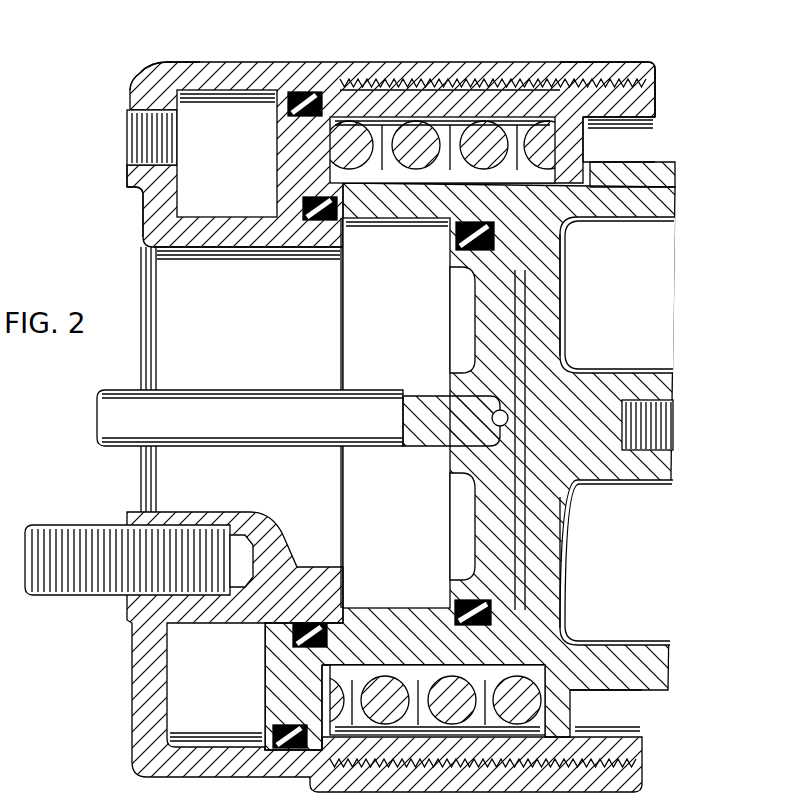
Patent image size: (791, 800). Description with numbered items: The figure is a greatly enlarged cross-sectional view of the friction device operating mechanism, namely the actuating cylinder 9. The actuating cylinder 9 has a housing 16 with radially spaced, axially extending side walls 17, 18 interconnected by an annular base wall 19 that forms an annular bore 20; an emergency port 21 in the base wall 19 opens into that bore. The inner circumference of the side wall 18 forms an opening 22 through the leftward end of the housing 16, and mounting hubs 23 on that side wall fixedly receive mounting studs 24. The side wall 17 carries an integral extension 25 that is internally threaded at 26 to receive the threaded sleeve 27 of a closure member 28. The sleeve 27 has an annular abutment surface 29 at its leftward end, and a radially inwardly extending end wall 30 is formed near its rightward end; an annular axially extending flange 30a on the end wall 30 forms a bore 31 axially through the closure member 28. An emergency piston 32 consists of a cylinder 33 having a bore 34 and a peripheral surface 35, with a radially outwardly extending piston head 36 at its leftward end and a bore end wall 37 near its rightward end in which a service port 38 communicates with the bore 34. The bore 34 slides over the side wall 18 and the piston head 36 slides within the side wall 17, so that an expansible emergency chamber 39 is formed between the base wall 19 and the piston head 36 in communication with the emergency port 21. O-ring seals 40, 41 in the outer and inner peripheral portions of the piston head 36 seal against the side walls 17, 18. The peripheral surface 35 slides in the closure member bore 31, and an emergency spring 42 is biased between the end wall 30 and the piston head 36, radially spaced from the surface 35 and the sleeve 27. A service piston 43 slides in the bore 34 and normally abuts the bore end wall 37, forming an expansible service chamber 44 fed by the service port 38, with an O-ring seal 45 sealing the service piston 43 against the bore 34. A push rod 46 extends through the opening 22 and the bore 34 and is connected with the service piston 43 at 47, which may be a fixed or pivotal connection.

The actuating cylinder 9 is at (130, 60).
The housing 16 is at (180, 62).
The side wall 17 is at (247, 76).
The side wall 18 is at (240, 252).
The base wall 19 is at (150, 208).
The annular bore 20 is at (205, 218).
The emergency port 21 is at (138, 159).
The opening 22 is at (176, 258).
The mounting hubs 23 is at (205, 512).
The mounting studs 24 is at (56, 527).
The integral extension 25 is at (582, 64).
The internal threads 26 is at (416, 82).
The threaded sleeve 27 is at (475, 92).
The closure member 28 is at (652, 102).
The annular abutment surface 29 is at (326, 100).
The end wall 30 is at (578, 141).
The annular axially extending flange 30a is at (670, 173).
The bore 31 is at (673, 201).
The emergency piston 32 is at (662, 268).
The cylinder 33 is at (449, 649).
The cylinder bore 34 is at (371, 623).
The peripheral surface 35 is at (508, 663).
The piston head 36 is at (292, 672).
The bore end wall 37 is at (553, 290).
The service port 38 is at (673, 447).
The emergency chamber 39 is at (234, 156).
The O-ring seal 40 is at (278, 736).
The O-ring seal 41 is at (295, 633).
The emergency spring 42 is at (464, 699).
The service piston 43 is at (456, 328).
The service chamber 44 is at (522, 332).
The O-ring seal 45 is at (458, 240).
The push rod 46 is at (280, 426).
The connection 47 is at (454, 444).